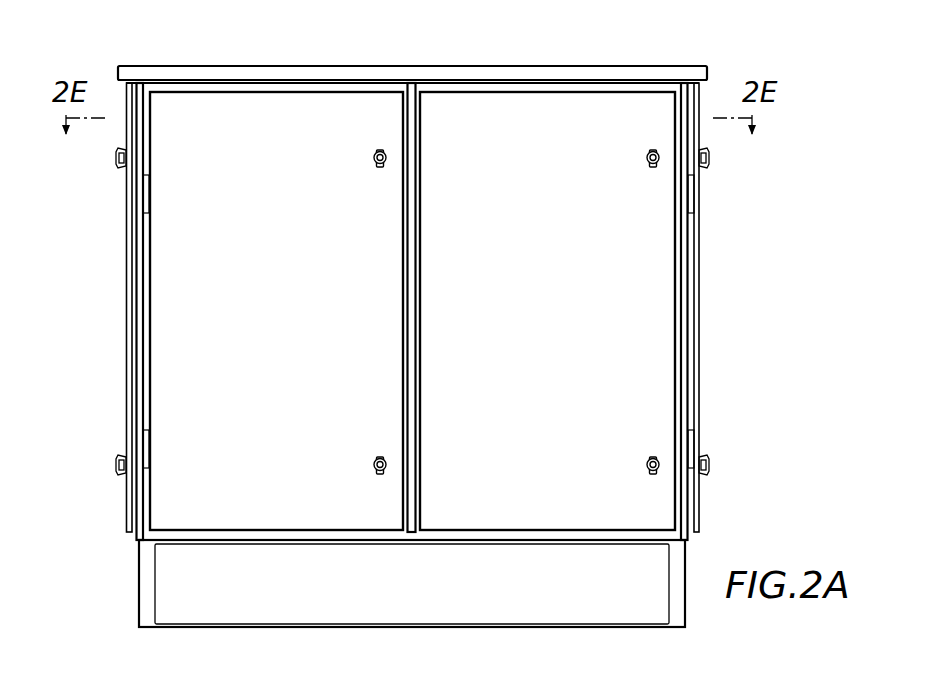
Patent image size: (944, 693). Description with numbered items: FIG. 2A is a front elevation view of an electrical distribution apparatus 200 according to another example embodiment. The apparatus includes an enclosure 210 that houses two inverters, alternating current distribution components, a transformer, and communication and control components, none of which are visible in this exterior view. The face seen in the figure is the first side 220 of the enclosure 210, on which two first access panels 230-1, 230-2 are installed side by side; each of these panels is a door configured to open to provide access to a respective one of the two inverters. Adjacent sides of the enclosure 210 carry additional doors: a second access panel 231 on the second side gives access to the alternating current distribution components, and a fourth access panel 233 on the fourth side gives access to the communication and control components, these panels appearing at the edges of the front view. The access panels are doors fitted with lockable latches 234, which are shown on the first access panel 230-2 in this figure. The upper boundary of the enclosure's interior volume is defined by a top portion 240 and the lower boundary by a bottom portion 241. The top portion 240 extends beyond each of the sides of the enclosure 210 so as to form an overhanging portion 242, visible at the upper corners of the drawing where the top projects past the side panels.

The electrical distribution apparatus 200 is at (183, 30).
The enclosure 210 is at (637, 53).
The first side 220 is at (406, 92).
The first access panel 230-1 is at (168, 362).
The first access panel 230-2 is at (647, 358).
The second access panel 231 is at (698, 262).
The fourth access panel 233 is at (128, 237).
The lockable latches 234 is at (647, 154).
The top portion 240 is at (527, 66).
The bottom portion 241 is at (180, 628).
The overhanging portion 242 is at (124, 89).